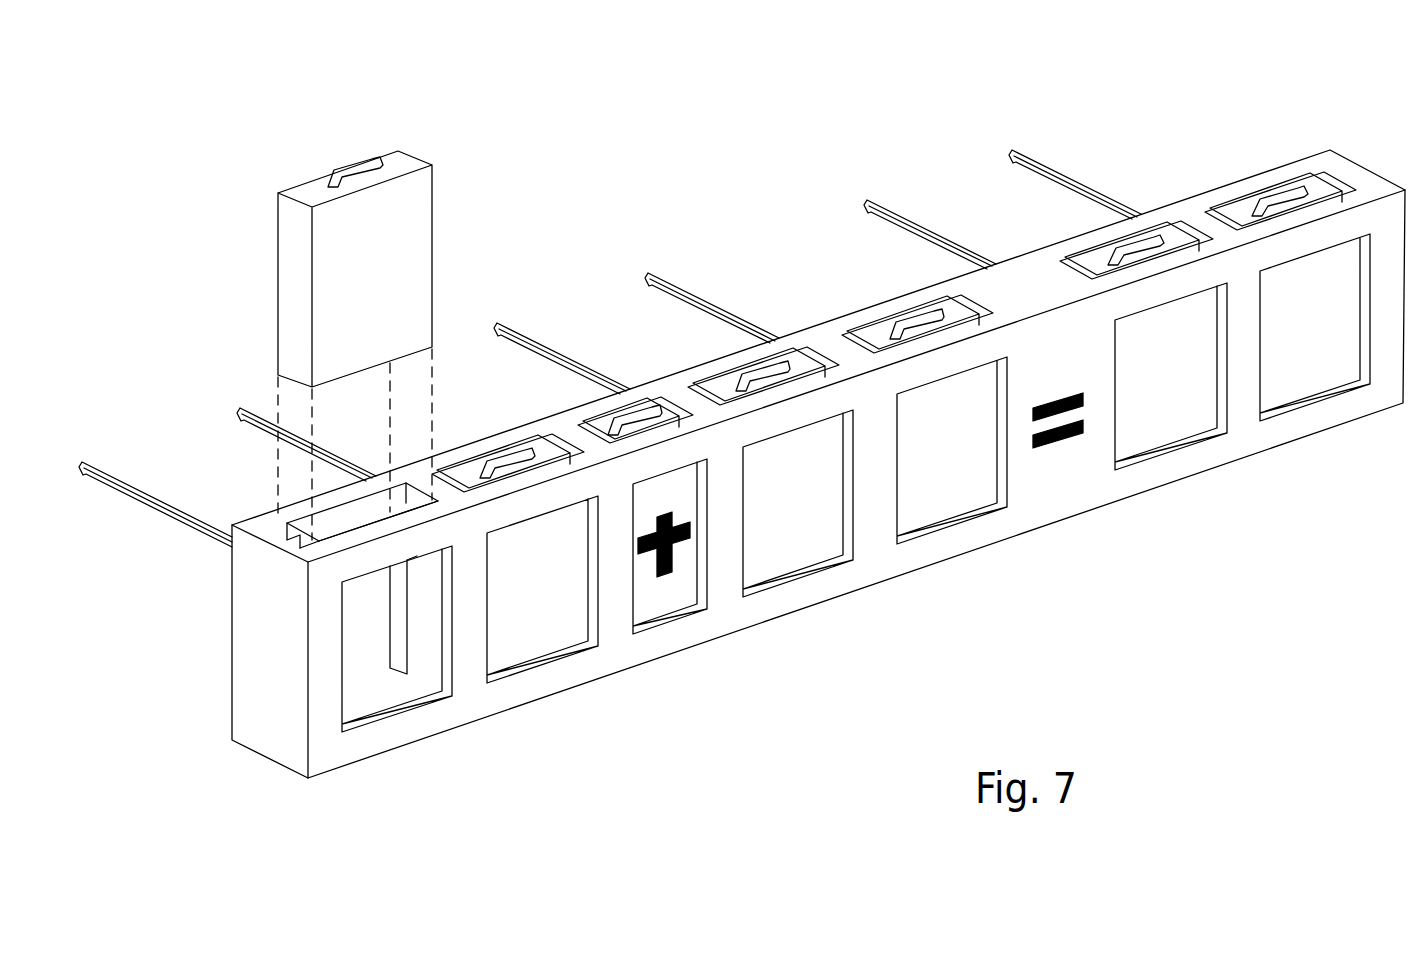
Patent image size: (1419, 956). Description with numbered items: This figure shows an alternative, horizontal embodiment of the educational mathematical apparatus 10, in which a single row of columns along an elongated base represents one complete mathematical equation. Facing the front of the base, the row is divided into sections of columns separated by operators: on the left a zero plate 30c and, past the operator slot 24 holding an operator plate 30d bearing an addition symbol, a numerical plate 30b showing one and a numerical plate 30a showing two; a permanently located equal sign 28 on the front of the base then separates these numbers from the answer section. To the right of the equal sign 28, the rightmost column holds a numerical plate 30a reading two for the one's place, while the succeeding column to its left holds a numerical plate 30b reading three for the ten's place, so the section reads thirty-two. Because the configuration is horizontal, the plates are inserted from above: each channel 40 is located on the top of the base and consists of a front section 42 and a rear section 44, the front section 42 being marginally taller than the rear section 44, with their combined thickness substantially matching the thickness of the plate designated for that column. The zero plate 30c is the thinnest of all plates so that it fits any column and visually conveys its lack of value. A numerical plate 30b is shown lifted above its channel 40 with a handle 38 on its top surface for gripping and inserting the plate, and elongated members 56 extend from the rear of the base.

The educational mathematical apparatus 10 is at (1300, 107).
The operator slot 24 is at (698, 612).
The equal sign 28 is at (1062, 443).
The numerical plate 30a is at (957, 497).
The numerical plate 30b is at (790, 553).
The zero plate 30c is at (515, 628).
The operator plate 30d is at (655, 592).
The handle 38 is at (362, 162).
The channel 40 is at (326, 524).
The front section 42 is at (320, 542).
The rear section 44 is at (342, 498).
The retaining pins 56 is at (1107, 195).